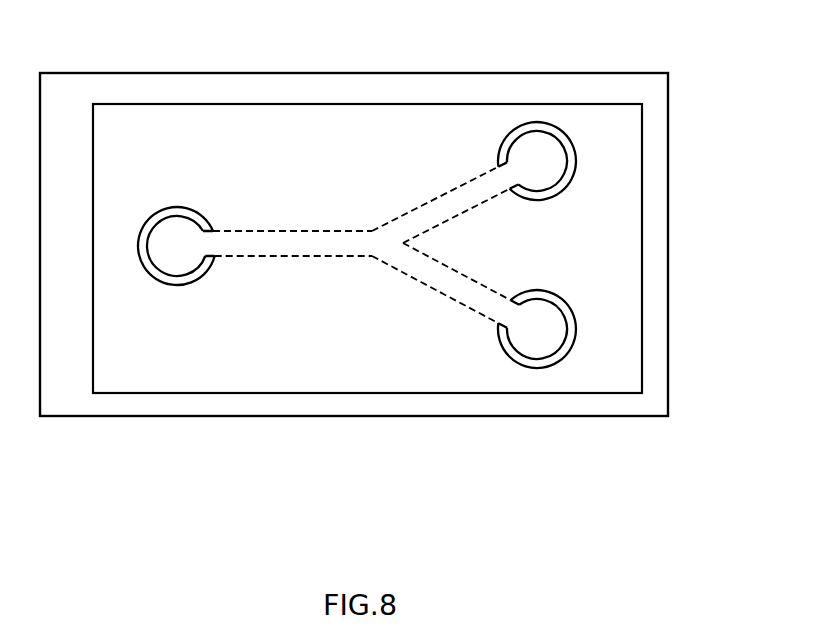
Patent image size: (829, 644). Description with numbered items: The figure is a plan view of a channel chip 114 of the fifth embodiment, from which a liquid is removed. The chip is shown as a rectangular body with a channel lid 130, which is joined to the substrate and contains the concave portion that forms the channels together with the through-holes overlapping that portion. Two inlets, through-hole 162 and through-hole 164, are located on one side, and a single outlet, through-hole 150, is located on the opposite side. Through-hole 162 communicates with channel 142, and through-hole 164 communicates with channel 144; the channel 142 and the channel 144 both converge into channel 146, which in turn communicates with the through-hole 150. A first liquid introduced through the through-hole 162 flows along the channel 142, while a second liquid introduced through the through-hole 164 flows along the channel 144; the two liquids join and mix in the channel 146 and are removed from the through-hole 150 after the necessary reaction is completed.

The channel chip 114 is at (648, 70).
The channel lid 130 is at (293, 408).
The channel 142 is at (418, 226).
The channel 144 is at (435, 277).
The channel 146 is at (285, 242).
The through-hole 150 is at (172, 240).
The through-hole 162 is at (542, 150).
The through-hole 164 is at (537, 348).